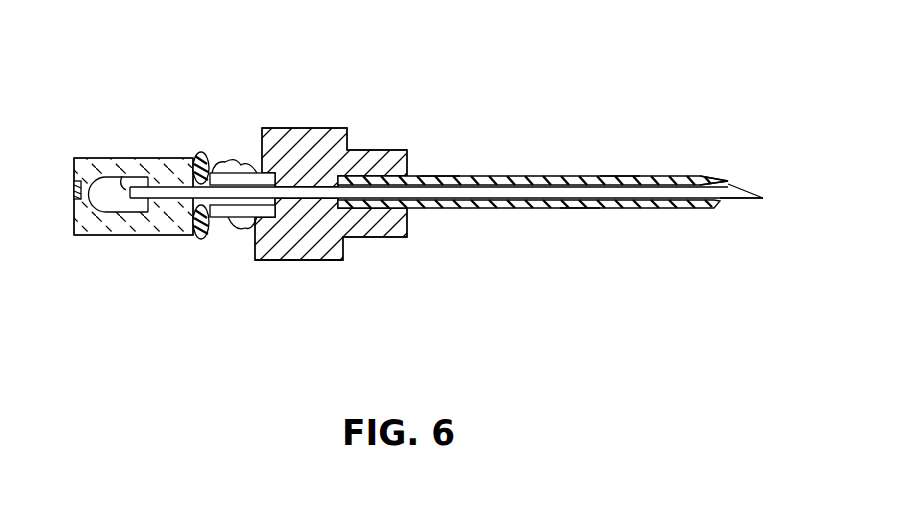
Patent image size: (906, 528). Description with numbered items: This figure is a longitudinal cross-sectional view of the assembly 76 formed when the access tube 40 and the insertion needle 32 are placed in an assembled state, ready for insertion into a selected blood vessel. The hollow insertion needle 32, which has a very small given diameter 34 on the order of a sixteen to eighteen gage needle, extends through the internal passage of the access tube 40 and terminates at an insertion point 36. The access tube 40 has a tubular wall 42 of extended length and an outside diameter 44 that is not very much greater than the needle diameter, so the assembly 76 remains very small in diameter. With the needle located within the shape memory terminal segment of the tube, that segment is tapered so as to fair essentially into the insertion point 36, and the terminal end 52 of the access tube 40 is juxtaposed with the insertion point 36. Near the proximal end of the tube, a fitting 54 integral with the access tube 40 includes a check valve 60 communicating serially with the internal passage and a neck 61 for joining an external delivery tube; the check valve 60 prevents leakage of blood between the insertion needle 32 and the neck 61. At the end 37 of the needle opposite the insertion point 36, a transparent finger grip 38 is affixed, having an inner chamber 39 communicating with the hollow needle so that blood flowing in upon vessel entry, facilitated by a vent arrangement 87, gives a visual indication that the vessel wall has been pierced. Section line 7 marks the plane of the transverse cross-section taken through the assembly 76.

The section line 7- 7 is at (451, 110).
The insertion needle 32 is at (573, 174).
The given diameter 34 is at (481, 208).
The insertion point 36 is at (764, 200).
The end 37 is at (122, 176).
The finger grip 38 is at (122, 236).
The inner chamber 39 is at (95, 205).
The access tube 40 is at (621, 175).
The tubular wall 42 is at (437, 176).
The outside diameter 44 is at (578, 209).
The terminal end 52 is at (728, 181).
The fitting 54 is at (347, 128).
The check valve 60 is at (202, 150).
The neck 61 is at (243, 164).
The assembly 76 is at (305, 264).
The vent arrangement 87 is at (74, 187).